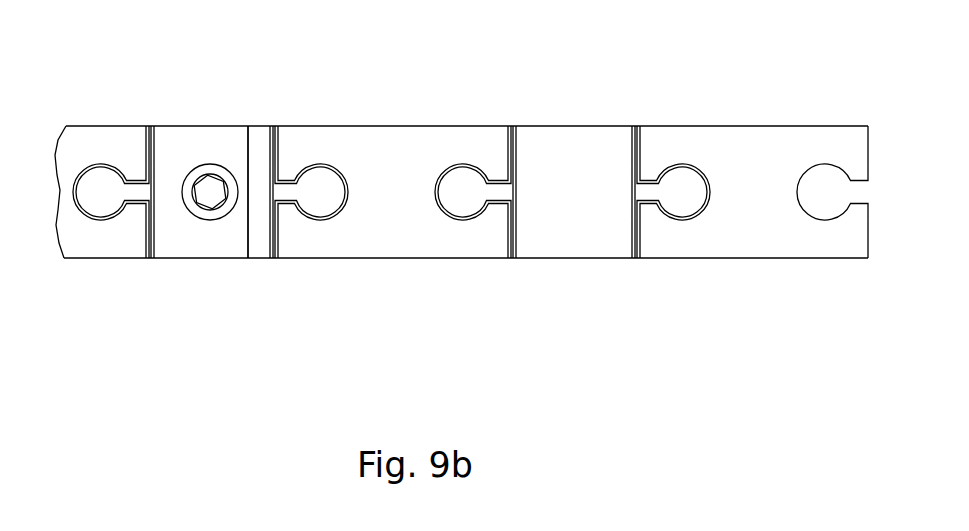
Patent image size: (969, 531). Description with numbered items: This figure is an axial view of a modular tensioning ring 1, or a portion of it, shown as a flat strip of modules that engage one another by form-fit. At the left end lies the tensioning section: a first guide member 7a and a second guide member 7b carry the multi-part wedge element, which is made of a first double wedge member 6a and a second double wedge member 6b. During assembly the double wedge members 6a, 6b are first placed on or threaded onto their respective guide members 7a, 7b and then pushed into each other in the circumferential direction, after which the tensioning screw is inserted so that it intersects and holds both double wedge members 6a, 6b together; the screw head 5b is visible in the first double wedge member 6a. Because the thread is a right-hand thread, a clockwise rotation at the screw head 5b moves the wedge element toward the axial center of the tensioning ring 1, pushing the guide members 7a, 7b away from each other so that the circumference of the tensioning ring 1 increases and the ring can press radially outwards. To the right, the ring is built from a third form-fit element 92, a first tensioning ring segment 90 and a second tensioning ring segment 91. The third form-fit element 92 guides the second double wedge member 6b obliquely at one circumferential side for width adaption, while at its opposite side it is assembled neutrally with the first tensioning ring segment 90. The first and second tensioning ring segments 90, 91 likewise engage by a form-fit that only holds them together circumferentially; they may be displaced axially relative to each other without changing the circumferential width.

The tensioning ring 1 is at (664, 387).
The screw head 5b is at (192, 190).
The first double wedge member 6a is at (169, 218).
The second double wedge member 6b is at (261, 223).
The guide member 7a is at (153, 278).
The guide member 7b is at (368, 278).
The first tensioning ring segment 90 is at (582, 202).
The second tensioning ring segment 91 is at (735, 208).
The third form-fit element 92 is at (393, 217).